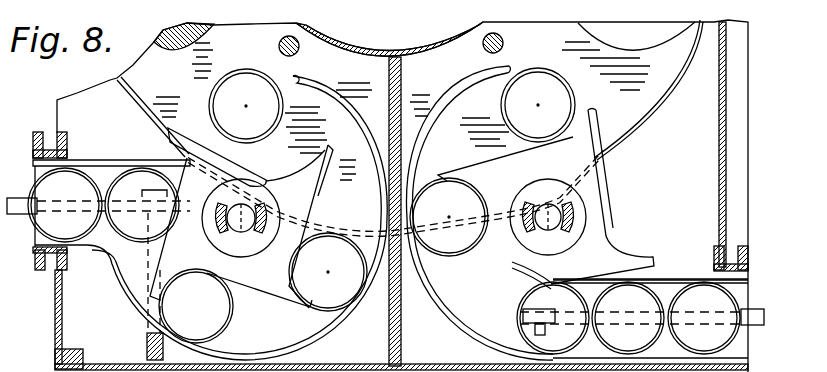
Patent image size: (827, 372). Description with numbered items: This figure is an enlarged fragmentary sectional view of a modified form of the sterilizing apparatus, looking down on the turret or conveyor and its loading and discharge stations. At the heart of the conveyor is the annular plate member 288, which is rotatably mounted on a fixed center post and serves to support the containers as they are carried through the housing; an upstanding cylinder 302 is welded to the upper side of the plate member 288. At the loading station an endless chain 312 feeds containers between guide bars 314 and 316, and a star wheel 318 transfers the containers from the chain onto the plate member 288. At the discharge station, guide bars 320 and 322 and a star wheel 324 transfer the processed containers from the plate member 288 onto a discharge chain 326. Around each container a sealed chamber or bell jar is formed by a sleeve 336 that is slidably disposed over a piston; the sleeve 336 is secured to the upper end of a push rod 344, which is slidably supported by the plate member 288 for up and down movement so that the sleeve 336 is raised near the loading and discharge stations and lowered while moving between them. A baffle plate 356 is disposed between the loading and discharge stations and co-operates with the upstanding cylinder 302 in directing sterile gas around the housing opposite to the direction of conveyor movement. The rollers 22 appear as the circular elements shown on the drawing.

The roller 22 is at (240, 69).
The annular plate member 288 is at (361, 62).
The upstanding cylinder 302 is at (424, 55).
The endless chain 312 is at (23, 214).
The guide bar 314 is at (117, 296).
The guide bar 316 is at (107, 160).
The star wheel 318 is at (203, 258).
The guide bar 320 is at (449, 300).
The guide bar 322 is at (658, 279).
The star wheel 324 is at (607, 237).
The discharge chain 326 is at (758, 308).
The sleeve or cylinder 336 is at (164, 50).
The push rod 344 is at (297, 52).
The baffle plate 356 is at (391, 329).